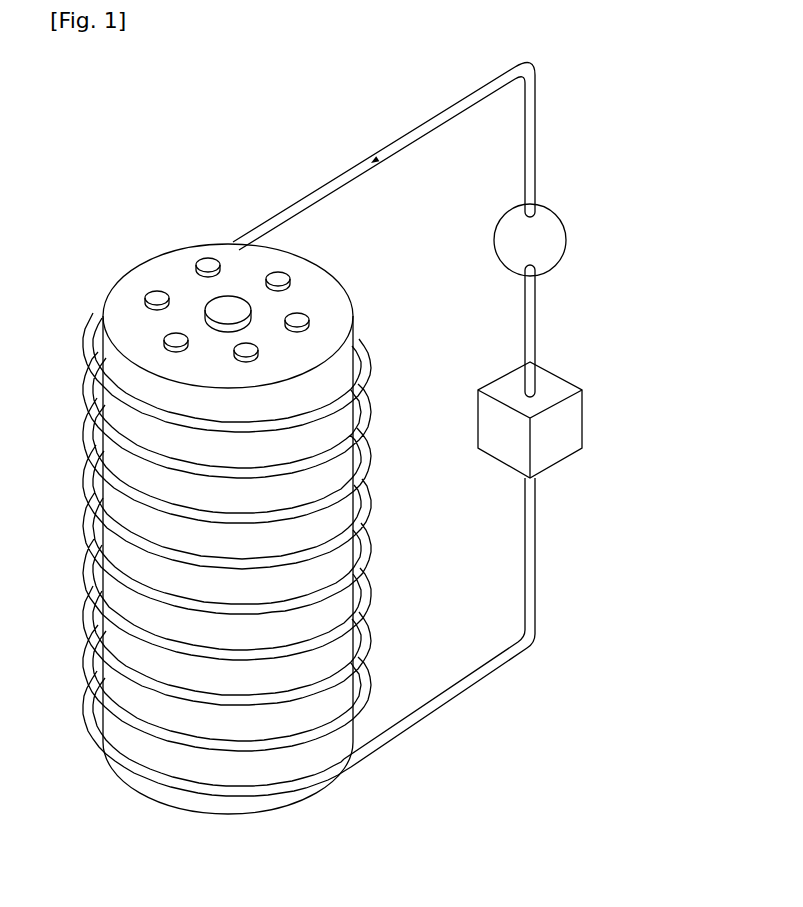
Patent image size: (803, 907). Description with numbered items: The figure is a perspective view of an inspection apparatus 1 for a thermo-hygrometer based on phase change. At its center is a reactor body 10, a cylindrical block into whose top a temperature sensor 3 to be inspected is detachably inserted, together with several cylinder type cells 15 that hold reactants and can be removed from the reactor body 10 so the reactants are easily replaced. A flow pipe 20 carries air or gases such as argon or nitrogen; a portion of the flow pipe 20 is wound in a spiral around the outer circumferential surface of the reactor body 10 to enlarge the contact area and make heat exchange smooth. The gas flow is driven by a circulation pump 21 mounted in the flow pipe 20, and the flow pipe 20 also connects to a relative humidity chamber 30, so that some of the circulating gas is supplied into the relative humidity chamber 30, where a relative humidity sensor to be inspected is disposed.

The inspection apparatus 1 is at (178, 109).
The temperature sensor 3 is at (229, 306).
The reactor body 10 is at (115, 290).
The cylinder type cell 15 is at (298, 318).
The flow pipe 20 is at (422, 118).
The circulation pump 21 is at (566, 239).
The relative humidity chamber 30 is at (577, 425).